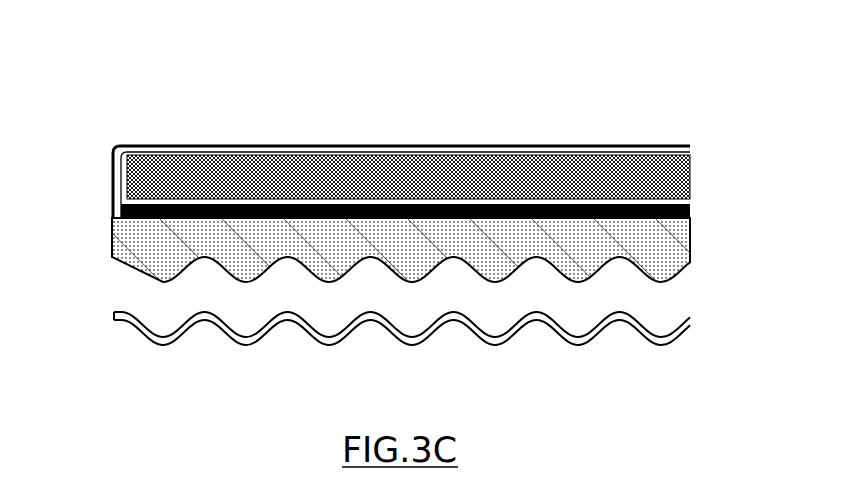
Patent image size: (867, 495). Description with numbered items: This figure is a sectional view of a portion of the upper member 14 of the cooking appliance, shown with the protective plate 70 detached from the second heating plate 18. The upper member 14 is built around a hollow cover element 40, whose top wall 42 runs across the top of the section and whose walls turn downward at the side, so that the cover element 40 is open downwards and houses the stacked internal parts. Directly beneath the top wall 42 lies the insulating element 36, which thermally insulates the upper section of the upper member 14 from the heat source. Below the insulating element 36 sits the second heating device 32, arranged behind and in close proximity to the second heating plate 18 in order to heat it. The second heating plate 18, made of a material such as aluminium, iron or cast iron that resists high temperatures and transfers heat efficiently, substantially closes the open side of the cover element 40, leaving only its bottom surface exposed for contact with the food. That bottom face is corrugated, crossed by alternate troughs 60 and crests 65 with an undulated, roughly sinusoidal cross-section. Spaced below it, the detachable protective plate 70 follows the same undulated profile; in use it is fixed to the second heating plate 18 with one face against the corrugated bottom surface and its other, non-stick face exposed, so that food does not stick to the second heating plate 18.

The upper member 14 is at (565, 57).
The hollow cover element 40 is at (119, 146).
The top wall 42 is at (362, 149).
The insulating element 36 is at (683, 170).
The second heating device 32 is at (683, 212).
The second heating plate 18 is at (682, 252).
The troughs 60 is at (533, 272).
The crests 65 is at (490, 289).
The detachable protective plate 70 is at (172, 346).